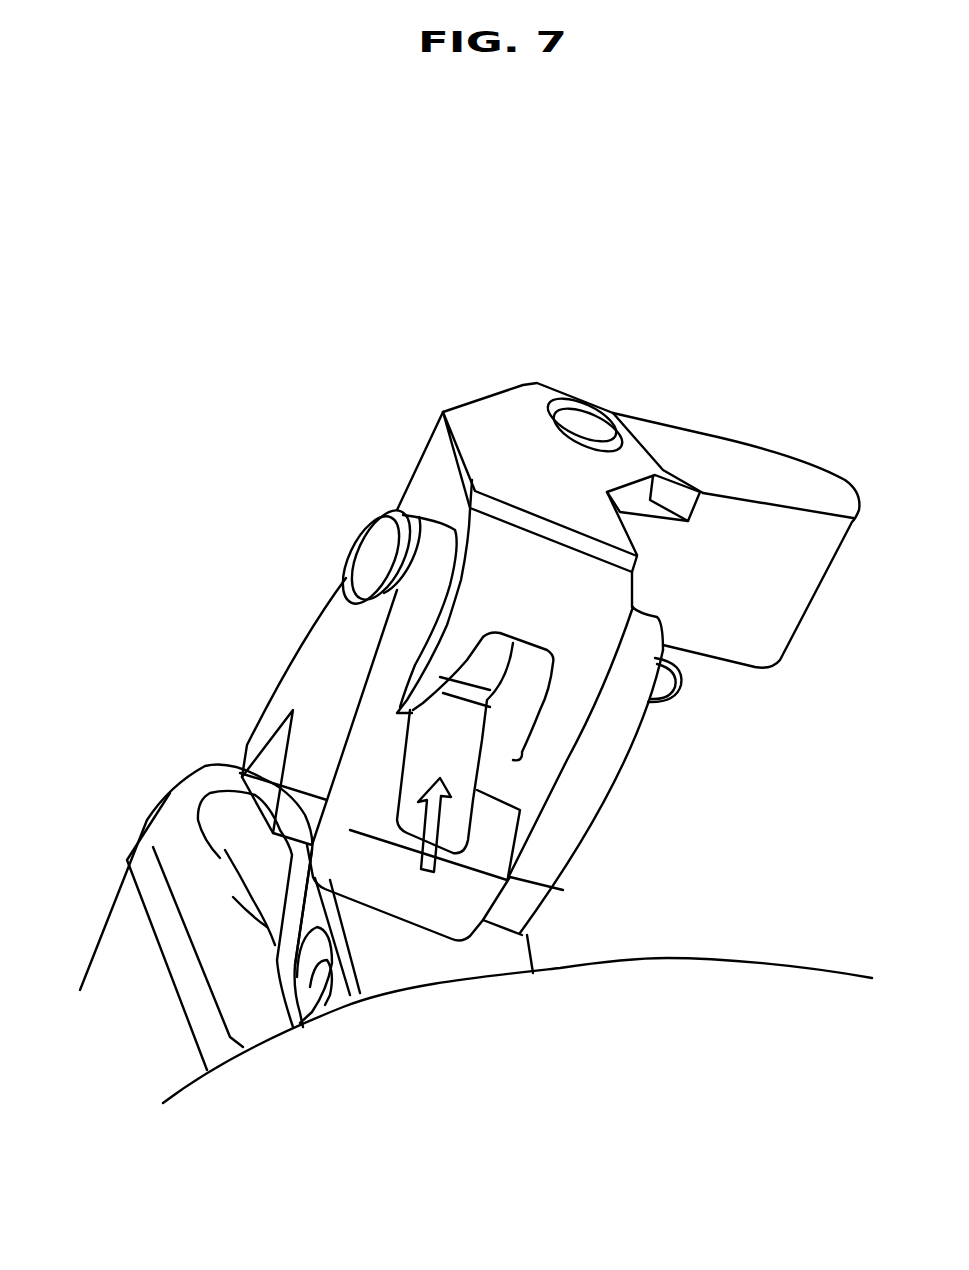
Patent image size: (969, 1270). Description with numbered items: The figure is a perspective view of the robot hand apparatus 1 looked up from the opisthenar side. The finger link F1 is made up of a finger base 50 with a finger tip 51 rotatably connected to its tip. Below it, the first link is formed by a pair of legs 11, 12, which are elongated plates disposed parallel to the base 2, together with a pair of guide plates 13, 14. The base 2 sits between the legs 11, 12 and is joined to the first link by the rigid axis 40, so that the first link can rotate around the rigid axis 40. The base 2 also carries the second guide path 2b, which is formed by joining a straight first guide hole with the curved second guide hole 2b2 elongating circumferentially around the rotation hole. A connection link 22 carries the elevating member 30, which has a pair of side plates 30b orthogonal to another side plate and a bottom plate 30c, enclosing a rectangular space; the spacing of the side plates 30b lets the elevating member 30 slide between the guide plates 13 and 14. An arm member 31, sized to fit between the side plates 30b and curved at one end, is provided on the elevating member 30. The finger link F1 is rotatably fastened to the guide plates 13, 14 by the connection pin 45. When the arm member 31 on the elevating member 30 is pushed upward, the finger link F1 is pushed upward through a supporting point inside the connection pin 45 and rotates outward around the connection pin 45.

The robot hand apparatus 1 is at (276, 366).
The finger link F1 is at (517, 382).
The base 2 is at (143, 832).
The second guide path 2b is at (228, 845).
The second guide hole 2b2 is at (273, 877).
The leg 11 is at (252, 910).
The leg 12 is at (277, 975).
The guide plate 13 is at (377, 687).
The guide plate 14 is at (610, 730).
The connection link 22 is at (493, 960).
The elevating member 30 is at (513, 800).
The side plate 30b is at (382, 780).
The bottom plate 30c is at (410, 897).
The arm member 31 is at (493, 760).
The rigid axis 40 is at (336, 982).
The connection pin 45 is at (363, 553).
The finger base 50 is at (430, 460).
The finger tip 51 is at (737, 457).